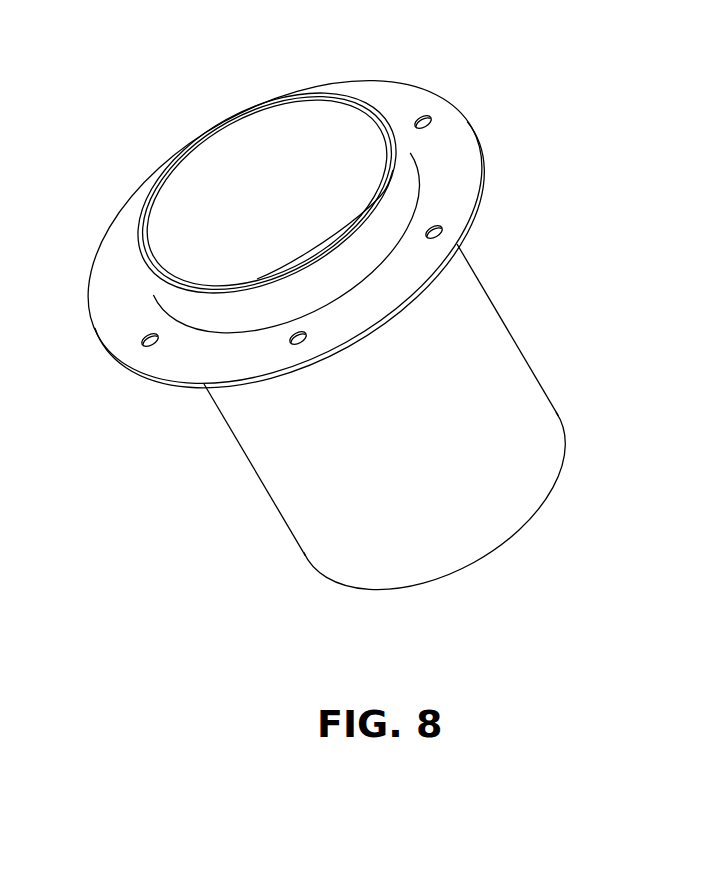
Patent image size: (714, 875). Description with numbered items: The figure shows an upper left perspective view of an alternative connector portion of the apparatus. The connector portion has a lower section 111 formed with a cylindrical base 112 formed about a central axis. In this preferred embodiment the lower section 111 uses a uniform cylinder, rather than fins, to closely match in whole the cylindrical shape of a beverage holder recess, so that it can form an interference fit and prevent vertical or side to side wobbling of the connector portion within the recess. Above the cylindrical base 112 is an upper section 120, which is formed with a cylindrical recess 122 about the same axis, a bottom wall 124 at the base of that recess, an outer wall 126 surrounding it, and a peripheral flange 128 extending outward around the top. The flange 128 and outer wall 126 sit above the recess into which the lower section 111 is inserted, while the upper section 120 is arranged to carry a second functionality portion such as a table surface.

The lower section 111 is at (520, 535).
The cylindrical base 112 is at (498, 433).
The upper section 120 is at (237, 118).
The cylindrical recess 122 is at (265, 194).
The bottom wall 124 is at (287, 262).
The outer wall 126 is at (453, 283).
The peripheral flange 128 is at (453, 156).